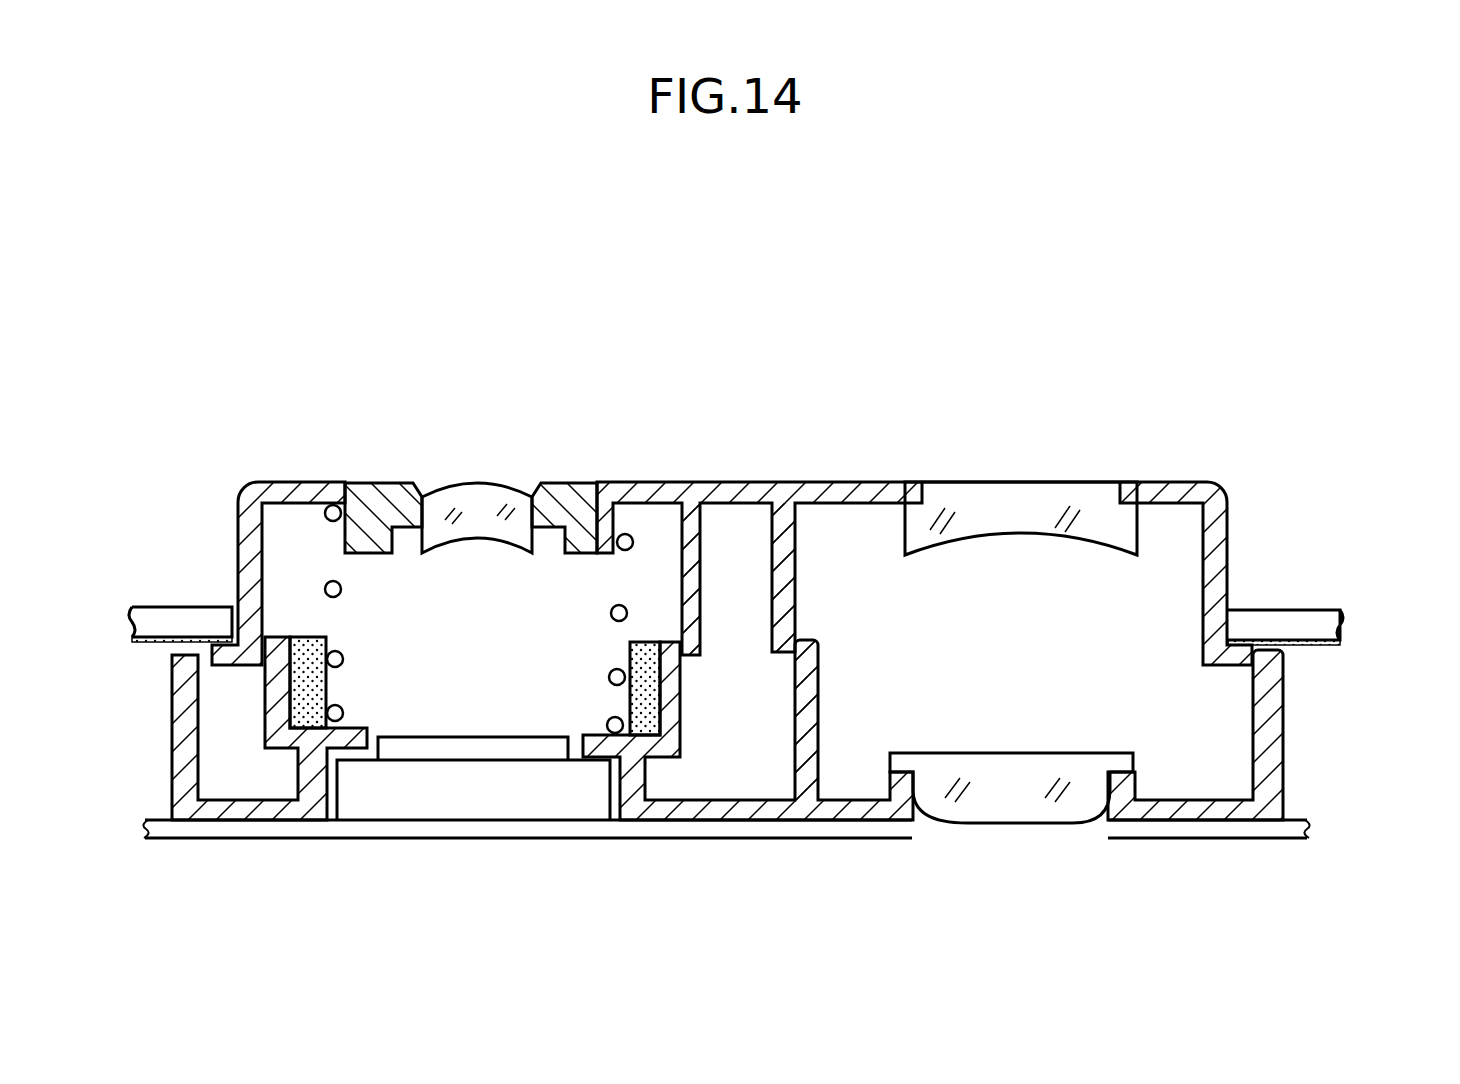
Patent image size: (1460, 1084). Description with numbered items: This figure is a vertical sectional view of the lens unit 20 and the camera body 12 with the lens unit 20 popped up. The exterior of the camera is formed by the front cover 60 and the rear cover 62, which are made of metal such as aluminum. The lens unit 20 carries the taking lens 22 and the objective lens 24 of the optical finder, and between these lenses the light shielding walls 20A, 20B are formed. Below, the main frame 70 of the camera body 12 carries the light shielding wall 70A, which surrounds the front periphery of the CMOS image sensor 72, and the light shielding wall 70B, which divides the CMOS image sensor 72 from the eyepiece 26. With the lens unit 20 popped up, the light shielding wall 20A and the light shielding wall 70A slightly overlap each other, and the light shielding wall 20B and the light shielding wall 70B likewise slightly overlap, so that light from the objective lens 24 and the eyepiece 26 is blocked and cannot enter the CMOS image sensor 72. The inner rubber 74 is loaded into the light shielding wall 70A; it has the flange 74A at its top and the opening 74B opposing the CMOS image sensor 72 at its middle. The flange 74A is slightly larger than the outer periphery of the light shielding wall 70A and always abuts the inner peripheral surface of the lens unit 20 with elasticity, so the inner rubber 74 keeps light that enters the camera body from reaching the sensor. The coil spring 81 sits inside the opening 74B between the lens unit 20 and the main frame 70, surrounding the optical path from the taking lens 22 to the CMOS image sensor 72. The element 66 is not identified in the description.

The camera body 12 is at (600, 842).
The lens unit 20 is at (1193, 482).
The light shielding wall 20A is at (710, 537).
The light shielding wall 20B is at (797, 613).
The taking lens 22 is at (490, 482).
The objective lens 24 is at (998, 505).
The eyepiece 26 is at (988, 813).
The front cover 60 is at (180, 607).
The rear cover 62 is at (1268, 840).
The adhesive layer 66 is at (153, 646).
The main frame 70 is at (1285, 729).
The light shielding wall 70A is at (696, 713).
The light shielding wall 70B is at (820, 707).
The CMOS image sensor 72 is at (480, 737).
The inner rubber 74 is at (308, 652).
The flange 74A is at (255, 545).
The opening 74B is at (627, 648).
The coil spring 81 is at (337, 504).